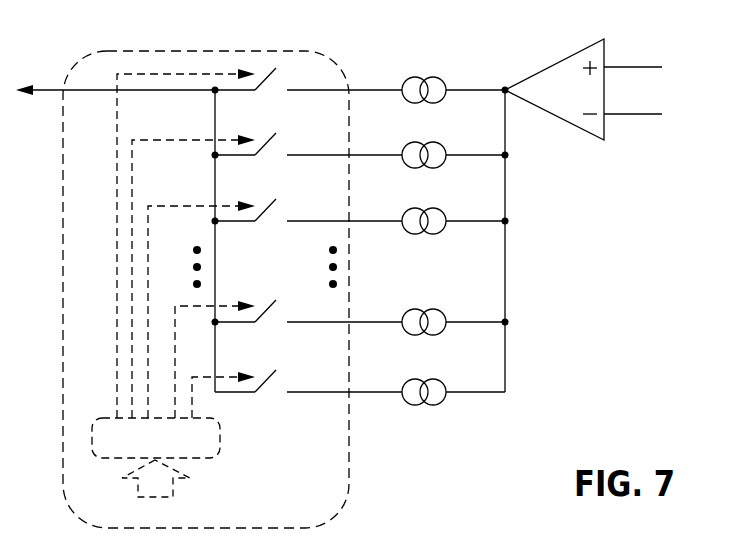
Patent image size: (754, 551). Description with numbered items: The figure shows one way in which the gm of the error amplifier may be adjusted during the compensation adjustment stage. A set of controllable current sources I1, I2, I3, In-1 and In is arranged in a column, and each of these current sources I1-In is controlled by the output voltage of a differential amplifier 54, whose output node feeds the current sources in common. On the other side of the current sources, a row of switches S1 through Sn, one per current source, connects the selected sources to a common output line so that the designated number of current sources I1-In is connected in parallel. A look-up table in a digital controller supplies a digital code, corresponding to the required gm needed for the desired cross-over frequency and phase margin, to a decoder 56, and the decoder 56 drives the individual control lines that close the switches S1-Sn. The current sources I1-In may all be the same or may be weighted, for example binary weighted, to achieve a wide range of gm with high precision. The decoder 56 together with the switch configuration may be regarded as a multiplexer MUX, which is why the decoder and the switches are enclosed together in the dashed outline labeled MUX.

The differential amplifier 54 is at (557, 63).
The decoder 56 is at (222, 441).
The switch S1 is at (270, 64).
The switch Sn is at (271, 372).
The controllable current source I1 is at (398, 74).
The controllable current source I2 is at (398, 139).
The controllable current source I3 is at (398, 205).
The controllable current source In-1 is at (398, 307).
The controllable current source In is at (396, 377).
The multiplexer MUX is at (206, 289).